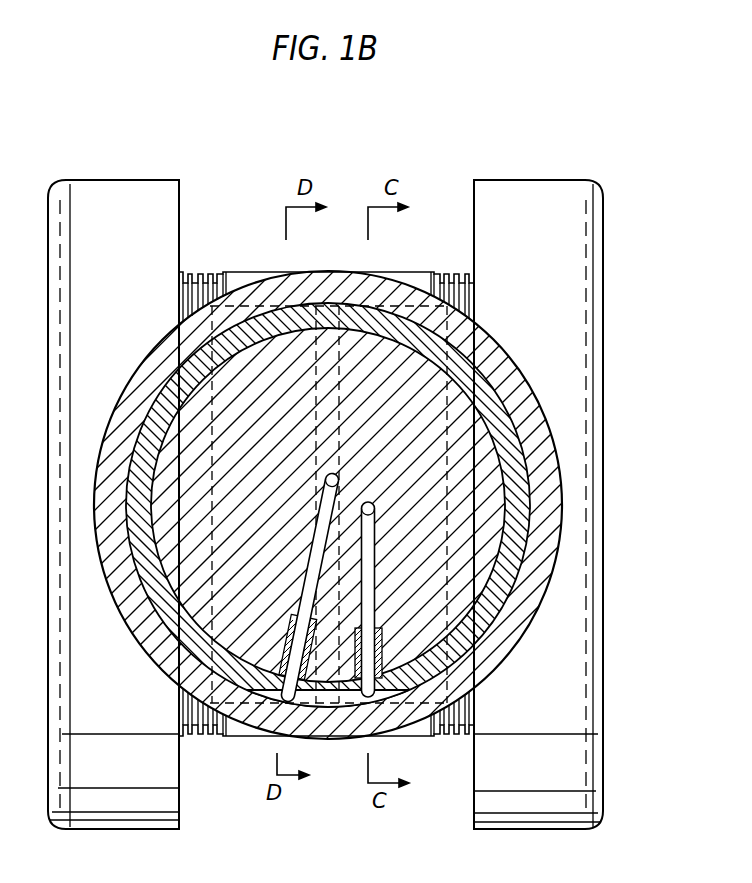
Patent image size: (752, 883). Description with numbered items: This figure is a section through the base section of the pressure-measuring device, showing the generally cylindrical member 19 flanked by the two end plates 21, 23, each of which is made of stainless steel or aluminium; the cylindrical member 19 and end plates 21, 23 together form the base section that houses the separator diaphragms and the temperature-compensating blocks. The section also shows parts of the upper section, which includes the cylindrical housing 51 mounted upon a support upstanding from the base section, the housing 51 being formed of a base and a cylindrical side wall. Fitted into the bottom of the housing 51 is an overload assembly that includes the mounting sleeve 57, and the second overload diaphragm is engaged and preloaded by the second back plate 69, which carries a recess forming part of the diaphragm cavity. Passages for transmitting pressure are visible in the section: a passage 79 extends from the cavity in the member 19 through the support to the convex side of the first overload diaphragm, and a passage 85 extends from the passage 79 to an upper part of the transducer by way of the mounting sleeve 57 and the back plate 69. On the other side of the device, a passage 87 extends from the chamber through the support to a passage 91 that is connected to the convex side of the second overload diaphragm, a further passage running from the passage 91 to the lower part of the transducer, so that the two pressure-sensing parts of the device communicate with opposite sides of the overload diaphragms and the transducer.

The generally cylindrical member 19 is at (424, 734).
The end plate 21 is at (535, 197).
The end plate 23 is at (115, 196).
The cylindrical housing 51 is at (542, 509).
The mounting sleeve 57 is at (515, 463).
The second back plate 69 is at (488, 552).
The passage 79 is at (372, 498).
The passage 85 is at (382, 640).
The passage 87 is at (297, 512).
The passage 91 is at (297, 620).